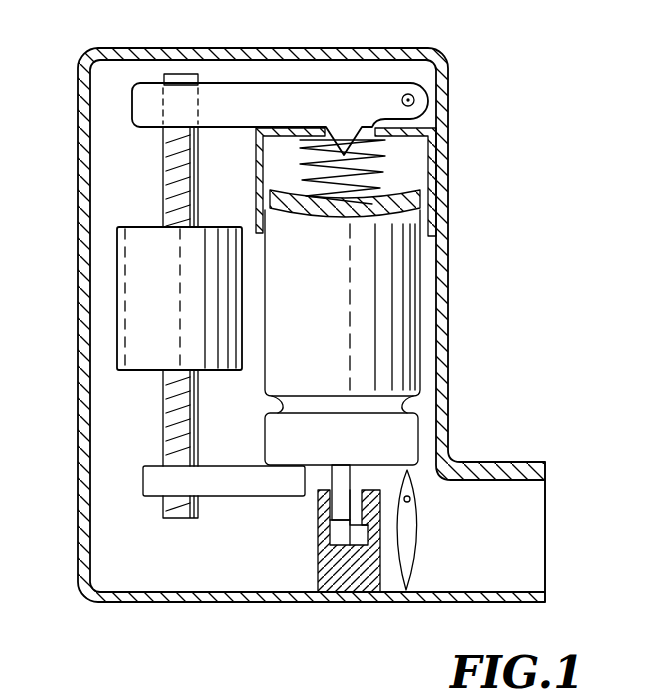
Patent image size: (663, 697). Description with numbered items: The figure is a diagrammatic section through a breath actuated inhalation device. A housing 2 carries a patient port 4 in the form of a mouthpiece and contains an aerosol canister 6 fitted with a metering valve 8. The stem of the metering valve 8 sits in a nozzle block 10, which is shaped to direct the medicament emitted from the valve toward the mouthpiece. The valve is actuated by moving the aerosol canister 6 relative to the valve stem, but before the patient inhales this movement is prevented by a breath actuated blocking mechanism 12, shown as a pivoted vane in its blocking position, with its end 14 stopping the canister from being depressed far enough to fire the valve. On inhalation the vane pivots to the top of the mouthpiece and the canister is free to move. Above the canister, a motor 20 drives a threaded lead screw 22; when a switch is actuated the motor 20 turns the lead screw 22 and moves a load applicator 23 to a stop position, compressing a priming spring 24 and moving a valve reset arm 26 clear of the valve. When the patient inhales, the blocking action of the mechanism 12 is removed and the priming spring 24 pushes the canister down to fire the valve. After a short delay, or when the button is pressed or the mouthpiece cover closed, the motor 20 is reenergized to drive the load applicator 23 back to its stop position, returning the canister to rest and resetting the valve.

The housing 2 is at (108, 50).
The patient port 4 is at (540, 500).
The aerosol canister 6 is at (405, 300).
The metering valve 8 is at (345, 480).
The nozzle block 10 is at (340, 565).
The breath actuated blocking mechanism 12 is at (408, 545).
The end of vane 14 is at (414, 472).
The motor 20 is at (120, 318).
The threaded lead screw 22 is at (172, 170).
The load applicator 23 is at (348, 108).
The priming spring 24 is at (385, 152).
The valve reset arm 26 is at (250, 483).